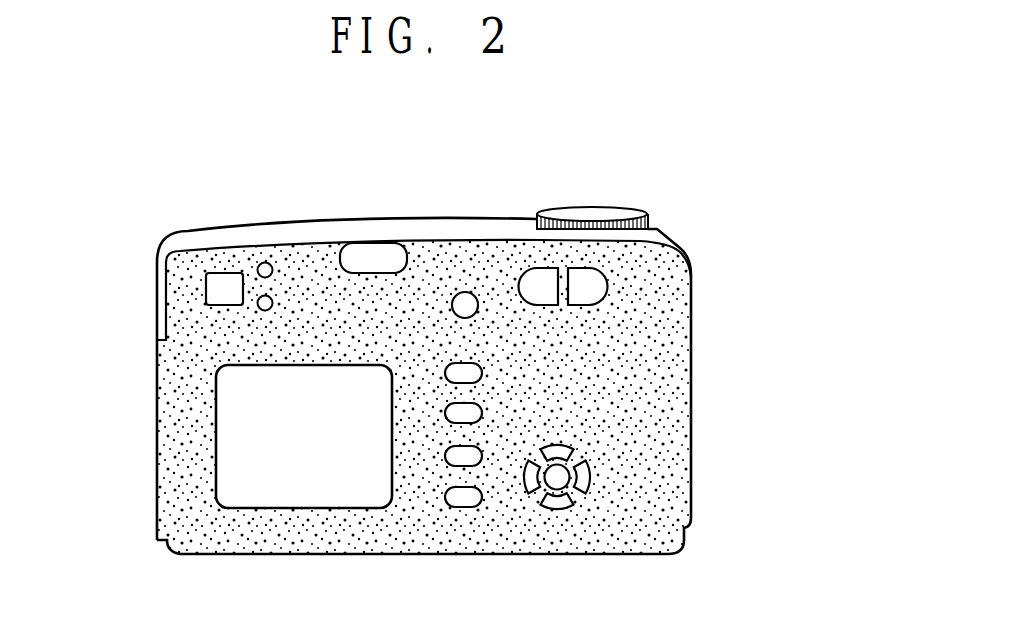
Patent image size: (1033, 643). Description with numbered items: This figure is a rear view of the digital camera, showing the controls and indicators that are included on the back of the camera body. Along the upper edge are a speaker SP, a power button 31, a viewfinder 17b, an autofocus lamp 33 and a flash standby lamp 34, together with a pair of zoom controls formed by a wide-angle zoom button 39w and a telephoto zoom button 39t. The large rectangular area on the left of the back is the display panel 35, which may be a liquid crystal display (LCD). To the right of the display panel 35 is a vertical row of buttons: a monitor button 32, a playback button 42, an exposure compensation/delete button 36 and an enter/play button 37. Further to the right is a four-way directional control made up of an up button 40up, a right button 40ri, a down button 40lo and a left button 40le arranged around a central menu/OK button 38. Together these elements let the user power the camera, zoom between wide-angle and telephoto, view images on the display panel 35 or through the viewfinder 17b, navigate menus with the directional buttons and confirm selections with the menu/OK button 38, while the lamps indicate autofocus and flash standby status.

The viewfinder 17b is at (222, 284).
The autofocus lamp 33 is at (265, 264).
The flash standby lamp 34 is at (257, 308).
The speaker SP is at (374, 252).
The power button 31 is at (468, 302).
The wide-angle zoom button 39w is at (537, 283).
The telephoto zoom button 39t is at (587, 283).
The monitor button 32 is at (482, 373).
The playback button 42 is at (482, 413).
The display panel 35 is at (305, 490).
The exposure compensation/delete button 36 is at (448, 466).
The enter/play button 37 is at (465, 502).
The menu/OK button 38 is at (560, 478).
The up button 40up is at (573, 447).
The right button 40ri is at (590, 475).
The down button 40lo is at (558, 508).
The left button 40le is at (523, 492).